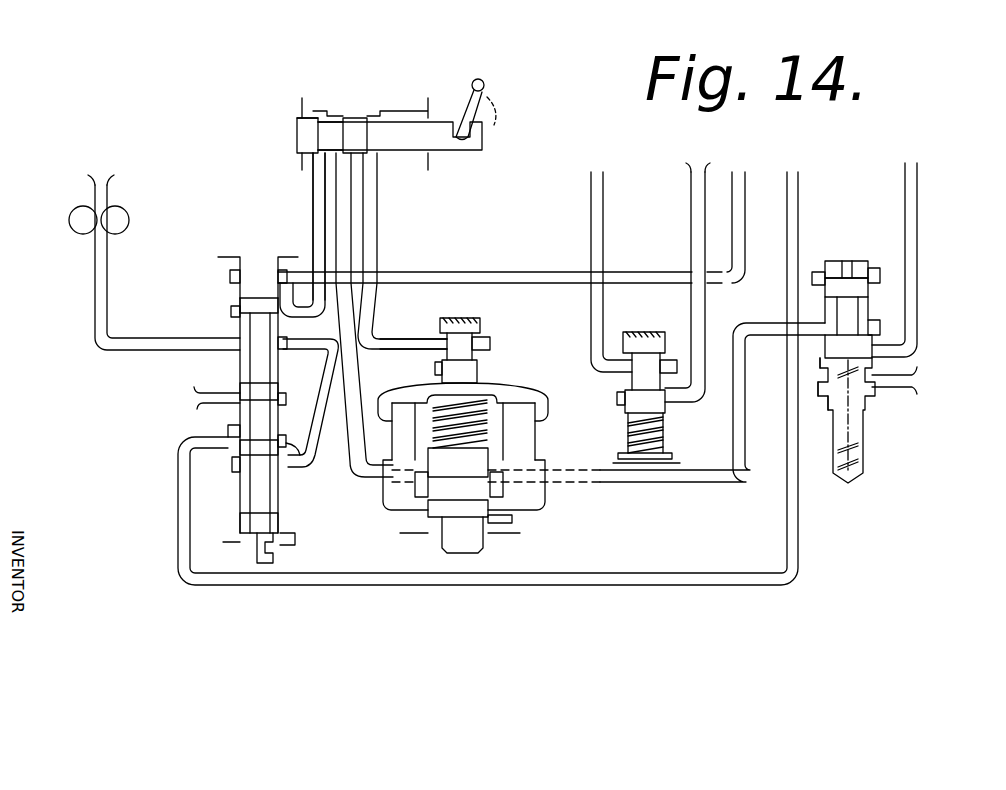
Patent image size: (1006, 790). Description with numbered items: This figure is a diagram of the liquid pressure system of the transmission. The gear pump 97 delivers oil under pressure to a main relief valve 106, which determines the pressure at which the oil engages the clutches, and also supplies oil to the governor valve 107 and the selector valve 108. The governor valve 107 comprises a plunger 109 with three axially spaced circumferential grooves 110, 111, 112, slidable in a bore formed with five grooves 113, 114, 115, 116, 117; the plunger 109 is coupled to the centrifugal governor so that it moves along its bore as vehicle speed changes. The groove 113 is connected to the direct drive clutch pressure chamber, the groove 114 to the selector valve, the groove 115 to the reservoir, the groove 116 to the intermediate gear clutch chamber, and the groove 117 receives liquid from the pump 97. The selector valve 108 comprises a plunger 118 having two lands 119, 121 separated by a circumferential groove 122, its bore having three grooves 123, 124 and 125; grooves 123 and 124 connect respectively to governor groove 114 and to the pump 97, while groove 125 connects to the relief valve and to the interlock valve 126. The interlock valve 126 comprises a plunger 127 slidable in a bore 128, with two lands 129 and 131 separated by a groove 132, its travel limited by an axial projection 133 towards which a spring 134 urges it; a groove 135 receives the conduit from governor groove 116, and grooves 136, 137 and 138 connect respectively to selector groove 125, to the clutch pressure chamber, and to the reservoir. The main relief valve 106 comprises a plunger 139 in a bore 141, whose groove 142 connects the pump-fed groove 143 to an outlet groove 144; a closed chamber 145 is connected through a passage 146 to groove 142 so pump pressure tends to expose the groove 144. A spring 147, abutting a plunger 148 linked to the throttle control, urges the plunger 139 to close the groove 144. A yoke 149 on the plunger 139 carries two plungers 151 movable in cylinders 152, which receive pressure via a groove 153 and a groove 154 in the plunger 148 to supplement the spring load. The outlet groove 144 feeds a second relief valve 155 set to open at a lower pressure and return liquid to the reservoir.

The gear pump 97 is at (126, 214).
The main relief valve 106 is at (501, 328).
The governor valve 107 is at (225, 374).
The selector valve 108 is at (421, 100).
The plunger 109 is at (256, 419).
The circumferential groove 110 is at (238, 330).
The circumferential groove 111 is at (236, 430).
The circumferential groove 112 is at (256, 506).
The groove 113 is at (231, 272).
The groove 114 is at (234, 308).
The groove 115 is at (293, 397).
The groove 116 is at (297, 471).
The groove 117 is at (232, 464).
The plunger 118 is at (304, 140).
The land 119 is at (300, 118).
The land 121 is at (357, 118).
The circumferential groove 122 is at (332, 112).
The circumferential groove 123 is at (317, 160).
The circumferential groove 124 is at (341, 160).
The groove 125 is at (373, 160).
The interlock valve 126 is at (889, 339).
The plunger 127 is at (850, 316).
The bore 128 is at (856, 272).
The land 129 is at (870, 290).
The land 131 is at (872, 346).
The groove 132 is at (832, 313).
The axial projection 133 is at (850, 268).
The spring 134 is at (872, 448).
The circumferential groove 135 is at (822, 268).
The circumferential groove 136 is at (823, 338).
The circumferential groove 137 is at (823, 366).
The circumferential groove 138 is at (826, 403).
The plunger 139 is at (479, 370).
The bore 141 is at (436, 338).
The circumferential groove 142 is at (440, 352).
The groove 143 is at (491, 344).
The outlet groove 144 is at (536, 394).
The closed chamber 145 is at (460, 318).
The passage 146 is at (481, 330).
The spring 147 is at (490, 440).
The plunger 148 is at (455, 497).
The yoke 149 is at (500, 412).
The plunger 151 is at (399, 442).
The cylinder 152 is at (402, 480).
The groove 153 is at (504, 480).
The groove 154 is at (480, 490).
The second relief valve 155 is at (683, 418).